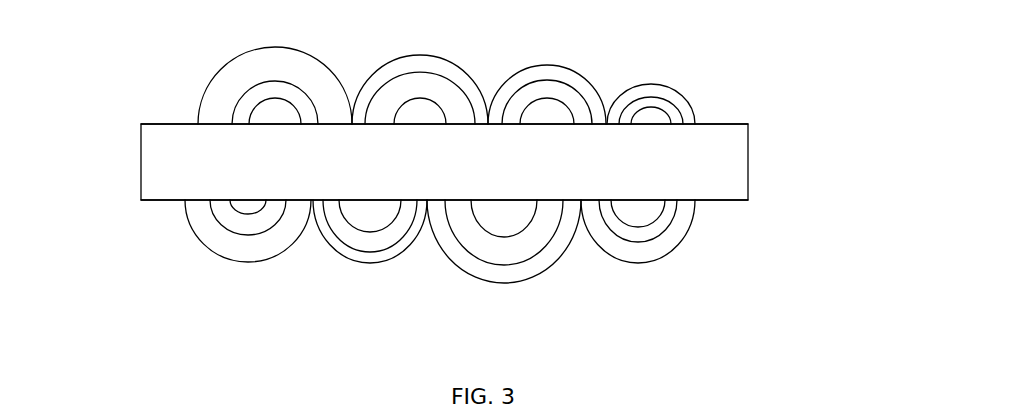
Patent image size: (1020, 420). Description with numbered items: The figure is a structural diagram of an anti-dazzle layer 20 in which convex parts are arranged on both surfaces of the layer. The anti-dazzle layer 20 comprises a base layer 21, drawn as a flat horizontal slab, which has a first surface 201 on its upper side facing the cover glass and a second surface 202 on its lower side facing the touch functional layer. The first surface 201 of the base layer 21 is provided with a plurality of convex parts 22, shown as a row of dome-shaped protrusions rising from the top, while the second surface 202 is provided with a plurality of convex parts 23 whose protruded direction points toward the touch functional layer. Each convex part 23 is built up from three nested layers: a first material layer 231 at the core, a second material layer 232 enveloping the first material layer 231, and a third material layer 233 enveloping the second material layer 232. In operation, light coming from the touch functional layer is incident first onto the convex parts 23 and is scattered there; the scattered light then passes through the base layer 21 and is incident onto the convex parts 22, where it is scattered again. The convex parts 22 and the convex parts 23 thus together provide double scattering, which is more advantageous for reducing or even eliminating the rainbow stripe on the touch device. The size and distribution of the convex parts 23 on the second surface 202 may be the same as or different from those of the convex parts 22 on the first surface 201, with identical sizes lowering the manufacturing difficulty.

The anti-dazzle layer 20 is at (843, 73).
The base layer 21 is at (748, 163).
The convex part 22 is at (735, 42).
The convex part 23 is at (473, 272).
The first surface 201 is at (170, 118).
The second surface 202 is at (155, 200).
The first material layer 231 is at (250, 207).
The second material layer 232 is at (230, 220).
The third material layer 233 is at (198, 218).